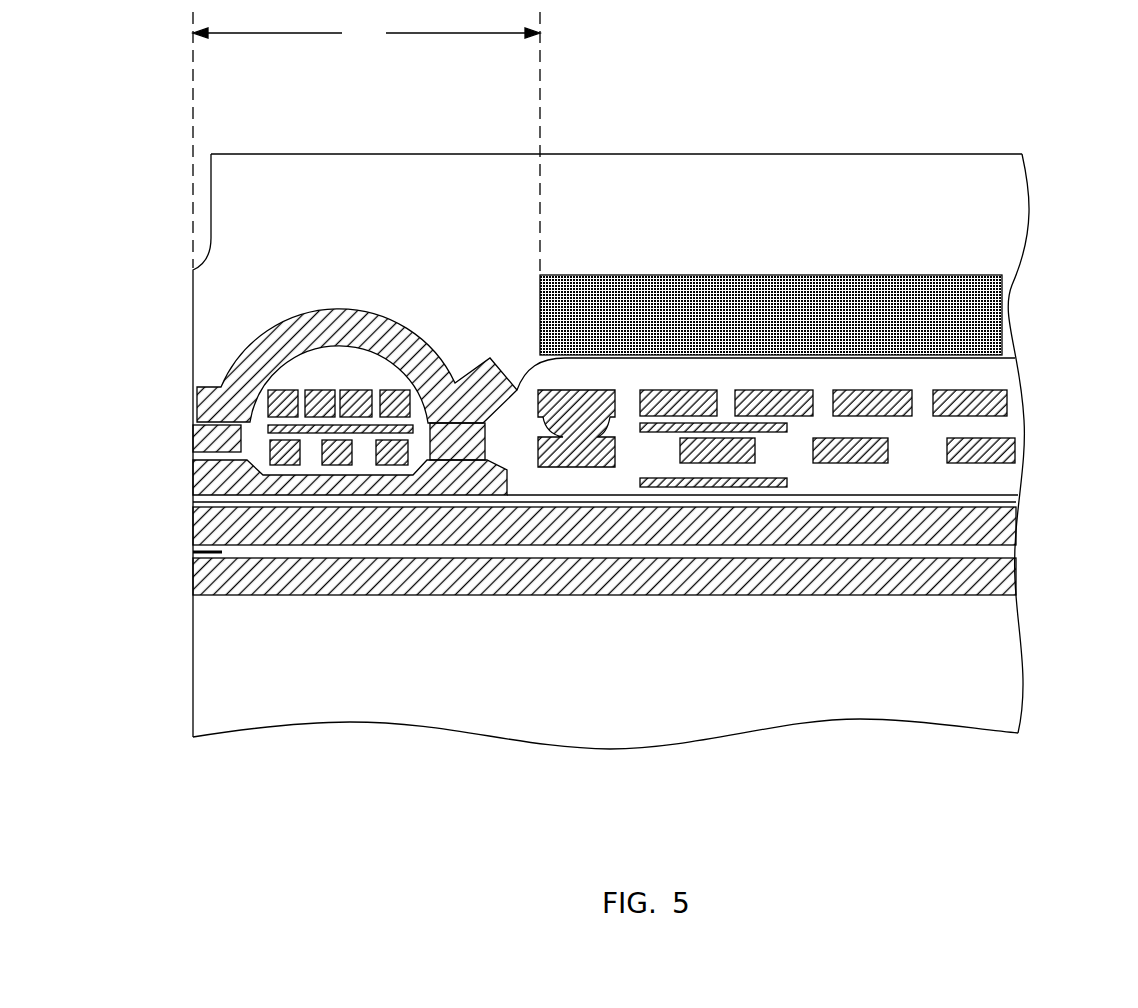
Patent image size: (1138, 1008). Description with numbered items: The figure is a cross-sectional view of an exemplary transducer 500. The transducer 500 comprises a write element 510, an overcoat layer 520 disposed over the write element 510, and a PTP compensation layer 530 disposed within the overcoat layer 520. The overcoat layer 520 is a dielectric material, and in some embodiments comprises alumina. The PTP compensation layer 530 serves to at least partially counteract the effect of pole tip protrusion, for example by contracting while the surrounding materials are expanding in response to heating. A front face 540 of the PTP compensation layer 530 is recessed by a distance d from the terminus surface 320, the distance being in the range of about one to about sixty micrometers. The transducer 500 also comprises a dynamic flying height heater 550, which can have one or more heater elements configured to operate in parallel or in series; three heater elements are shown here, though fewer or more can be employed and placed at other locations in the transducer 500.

The terminus surface 320 is at (193, 633).
The transducer 500 is at (305, 154).
The write element 510 is at (156, 315).
The overcoat layer 520 is at (945, 168).
The PTP compensation layer 530 is at (832, 274).
The front face 540 is at (540, 315).
The dynamic flying height heater 550 is at (418, 424).